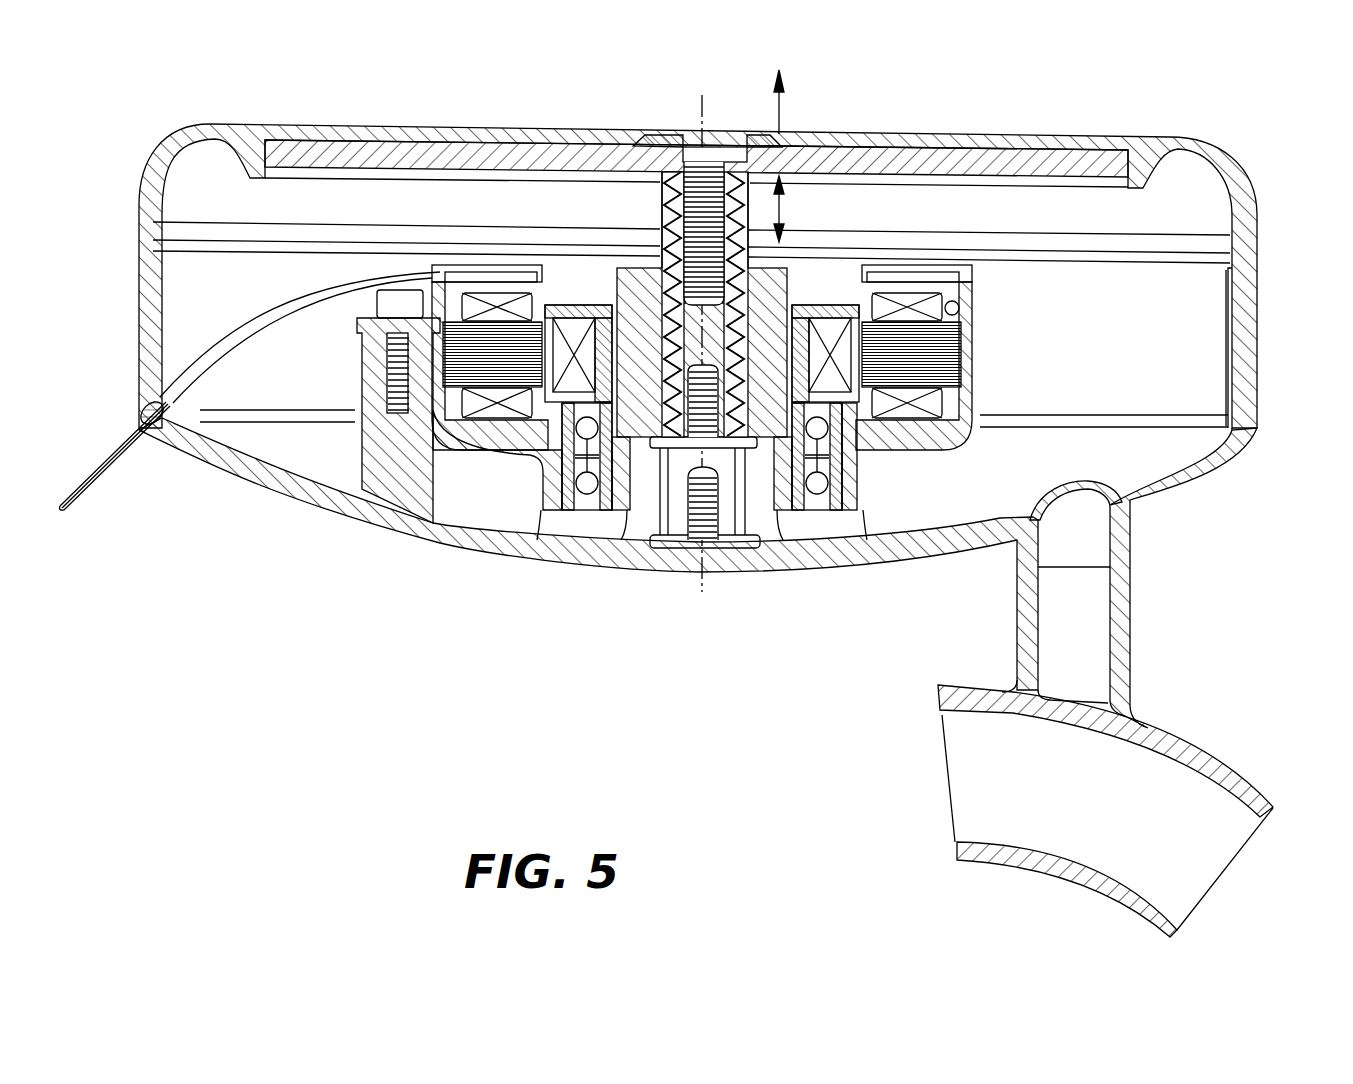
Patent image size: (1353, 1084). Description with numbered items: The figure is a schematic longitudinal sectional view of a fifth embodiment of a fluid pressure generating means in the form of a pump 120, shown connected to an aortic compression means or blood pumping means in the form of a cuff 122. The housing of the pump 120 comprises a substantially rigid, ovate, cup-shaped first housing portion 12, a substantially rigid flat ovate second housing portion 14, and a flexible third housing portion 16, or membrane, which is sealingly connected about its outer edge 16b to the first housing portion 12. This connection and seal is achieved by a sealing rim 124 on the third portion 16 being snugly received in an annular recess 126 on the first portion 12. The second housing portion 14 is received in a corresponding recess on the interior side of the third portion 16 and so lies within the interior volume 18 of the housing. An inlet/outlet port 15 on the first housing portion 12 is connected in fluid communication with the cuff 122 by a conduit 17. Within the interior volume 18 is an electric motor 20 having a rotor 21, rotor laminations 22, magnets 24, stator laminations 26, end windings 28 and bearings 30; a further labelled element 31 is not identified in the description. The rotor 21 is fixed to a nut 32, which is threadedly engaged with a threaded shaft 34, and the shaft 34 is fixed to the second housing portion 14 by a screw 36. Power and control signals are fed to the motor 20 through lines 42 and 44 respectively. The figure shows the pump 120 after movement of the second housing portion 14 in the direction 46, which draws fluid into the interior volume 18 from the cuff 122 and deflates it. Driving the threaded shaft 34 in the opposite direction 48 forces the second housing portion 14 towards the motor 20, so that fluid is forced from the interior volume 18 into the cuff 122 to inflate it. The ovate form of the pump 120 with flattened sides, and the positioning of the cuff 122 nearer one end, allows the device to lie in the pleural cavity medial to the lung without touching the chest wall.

The first housing portion 12 is at (498, 555).
The second housing portion 14 is at (1050, 177).
The inlet/outlet port 15 is at (1124, 547).
The third housing portion 16 is at (1043, 163).
The outer edge 16b is at (1258, 305).
The conduit 17 is at (1122, 620).
The interior volume 18 is at (691, 324).
The electric motor 20 is at (493, 473).
The rotor 21 is at (558, 305).
The rotor laminations 22 is at (580, 306).
The magnets 24 is at (840, 320).
The stator laminations 26 is at (963, 380).
The end windings 28 is at (960, 310).
The bearings 30 is at (848, 440).
The wire 31 is at (373, 305).
The nut 32 is at (795, 282).
The threaded shaft 34 is at (662, 198).
The screw 36 is at (690, 146).
The power line 42 is at (92, 482).
The control signal line 44 is at (115, 456).
The direction 46 is at (782, 118).
The opposite direction 48 is at (785, 218).
The pump 120 is at (658, 602).
The cuff 122 is at (1186, 725).
The sealing rim 124 is at (1248, 292).
The annular recess 126 is at (1250, 286).